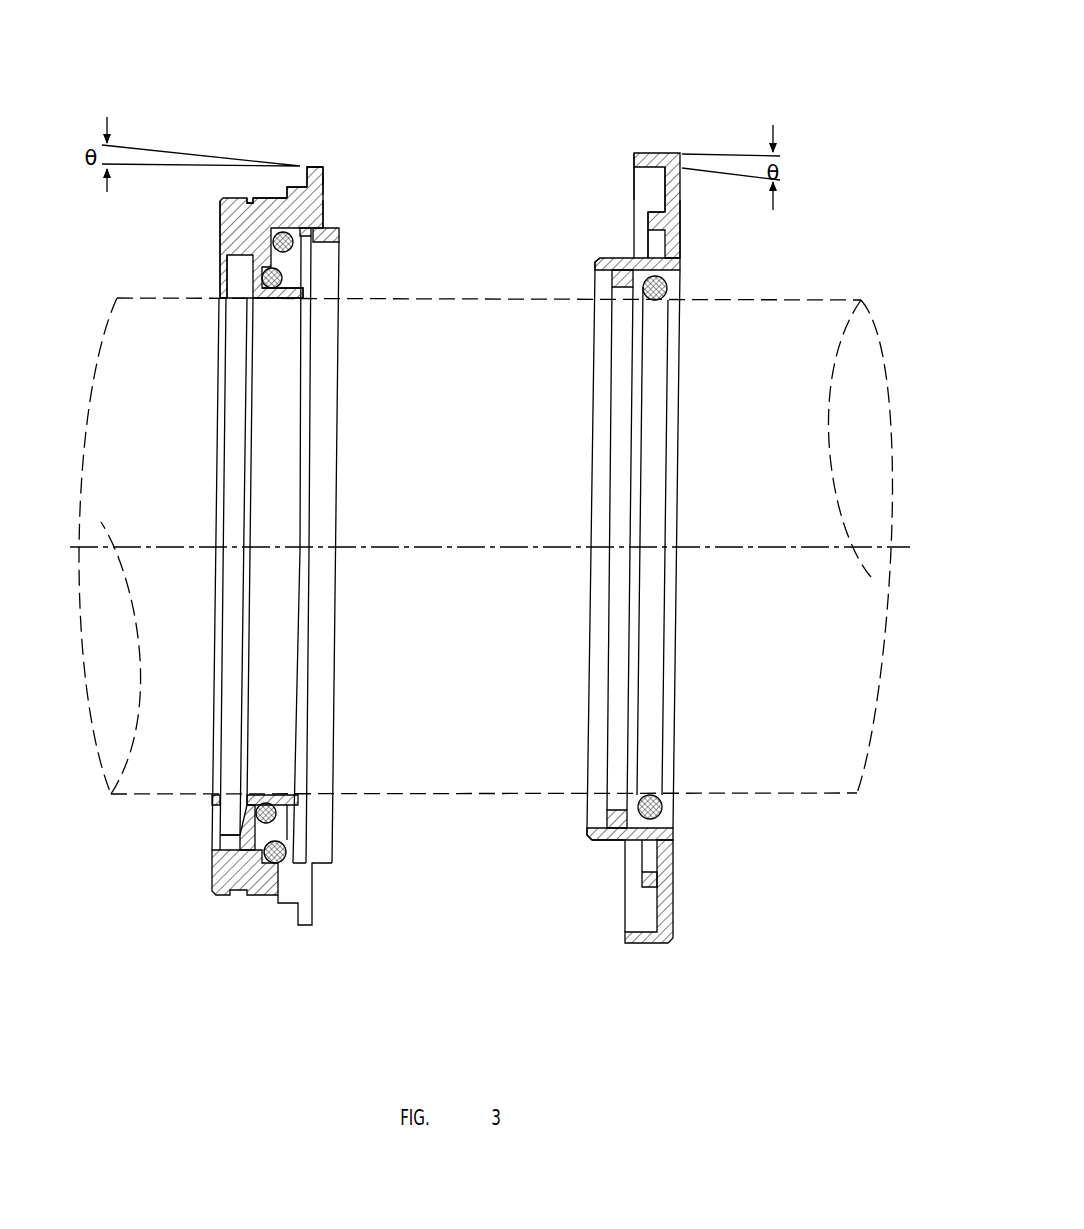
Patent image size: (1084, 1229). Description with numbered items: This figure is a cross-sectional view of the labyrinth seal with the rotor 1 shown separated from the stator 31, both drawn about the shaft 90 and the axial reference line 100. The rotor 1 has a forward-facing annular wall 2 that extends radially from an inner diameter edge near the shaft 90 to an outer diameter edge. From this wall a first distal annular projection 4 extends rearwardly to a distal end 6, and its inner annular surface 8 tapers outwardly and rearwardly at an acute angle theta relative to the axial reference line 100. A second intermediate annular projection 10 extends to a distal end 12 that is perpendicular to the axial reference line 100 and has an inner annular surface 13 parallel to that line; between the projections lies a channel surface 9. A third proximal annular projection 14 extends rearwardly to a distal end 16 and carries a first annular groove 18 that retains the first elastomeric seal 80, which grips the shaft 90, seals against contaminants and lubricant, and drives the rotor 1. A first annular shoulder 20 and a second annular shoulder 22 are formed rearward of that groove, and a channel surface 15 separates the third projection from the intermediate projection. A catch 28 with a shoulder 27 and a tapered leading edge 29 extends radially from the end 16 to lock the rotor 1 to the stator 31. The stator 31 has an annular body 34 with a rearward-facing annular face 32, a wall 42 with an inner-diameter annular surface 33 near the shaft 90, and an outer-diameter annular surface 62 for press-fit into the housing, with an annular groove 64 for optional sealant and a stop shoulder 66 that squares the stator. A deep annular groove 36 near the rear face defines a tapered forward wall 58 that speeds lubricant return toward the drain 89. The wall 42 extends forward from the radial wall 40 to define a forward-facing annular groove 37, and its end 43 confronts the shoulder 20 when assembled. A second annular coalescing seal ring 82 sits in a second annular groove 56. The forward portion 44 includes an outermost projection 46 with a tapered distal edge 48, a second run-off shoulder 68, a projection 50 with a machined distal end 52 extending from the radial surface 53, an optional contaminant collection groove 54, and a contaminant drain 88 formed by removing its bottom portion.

The rotor 1 is at (808, 185).
The forward-facing annular wall 2 is at (681, 222).
The first distal annular projection 4 is at (665, 153).
The distal end 6 is at (632, 157).
The inner annular surface 8 is at (635, 183).
The channel surface 9 is at (661, 187).
The second intermediate annular projection 10 is at (650, 193).
The distal end 12 is at (648, 217).
The inner annular surface 13 is at (648, 243).
The third proximal annular projection 14 is at (668, 292).
The channel surface 15 is at (683, 260).
The distal end 16 is at (592, 260).
The first annular groove 18 is at (660, 350).
The first annular shoulder 20 is at (622, 300).
The second annular shoulder 22 is at (598, 285).
The shoulder 27 is at (592, 842).
The catch 28 is at (588, 869).
The tapered leading edge 29 is at (592, 842).
The stator 31 is at (198, 407).
The rearward-facing annular face 32 is at (220, 243).
The inner-diameter annular surface 33 is at (263, 479).
The annular body 34 is at (220, 233).
The annular groove 36 is at (230, 804).
The forward-facing annular groove 37 is at (270, 832).
The radial wall 40 is at (227, 268).
The wall 42 is at (273, 300).
The end 43 is at (303, 293).
The forward portion 44 is at (335, 230).
The outermost radially-extending projection 46 is at (328, 172).
The tapered distal edge 48 is at (318, 167).
The projection 50 is at (325, 215).
The machined distal end 52 is at (338, 233).
The machined radial surface 53 is at (325, 183).
The annular contaminant collection groove 54 is at (305, 243).
The second annular groove 56 is at (288, 263).
The tapered forward wall 58 is at (250, 298).
The outer-diameter annular surface 62 is at (246, 200).
The annular groove 64 is at (287, 192).
The stop shoulder 66 is at (265, 198).
The second run-off shoulder 68 is at (313, 167).
The first elastomeric seal 80 is at (655, 455).
The second annular coalescing seal ring 82 is at (280, 836).
The contaminant drain 88 is at (253, 914).
The drain 89 is at (198, 840).
The shaft 90 is at (752, 680).
The axial reference line 100 is at (410, 547).